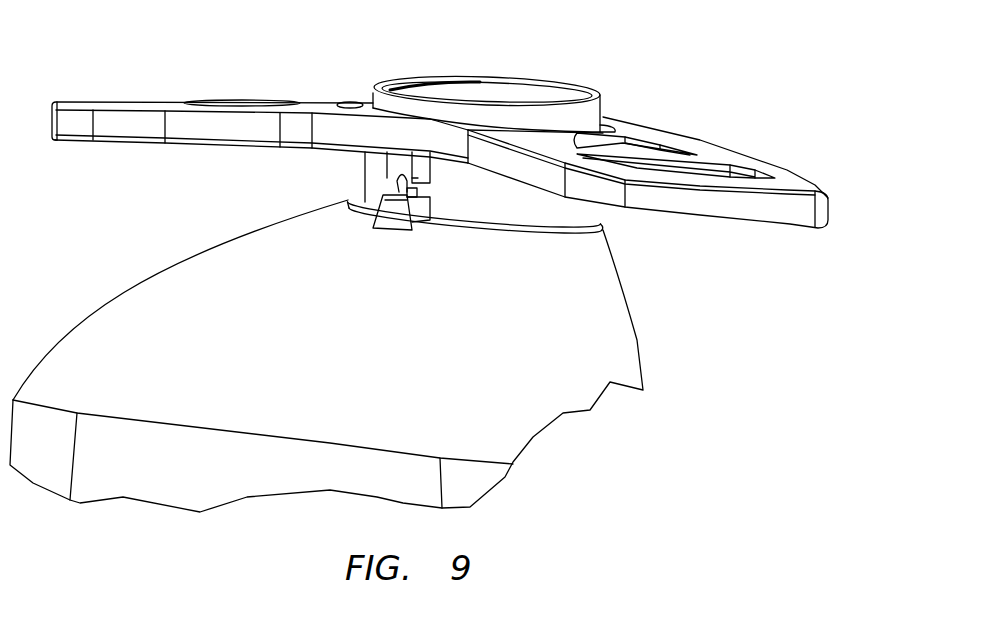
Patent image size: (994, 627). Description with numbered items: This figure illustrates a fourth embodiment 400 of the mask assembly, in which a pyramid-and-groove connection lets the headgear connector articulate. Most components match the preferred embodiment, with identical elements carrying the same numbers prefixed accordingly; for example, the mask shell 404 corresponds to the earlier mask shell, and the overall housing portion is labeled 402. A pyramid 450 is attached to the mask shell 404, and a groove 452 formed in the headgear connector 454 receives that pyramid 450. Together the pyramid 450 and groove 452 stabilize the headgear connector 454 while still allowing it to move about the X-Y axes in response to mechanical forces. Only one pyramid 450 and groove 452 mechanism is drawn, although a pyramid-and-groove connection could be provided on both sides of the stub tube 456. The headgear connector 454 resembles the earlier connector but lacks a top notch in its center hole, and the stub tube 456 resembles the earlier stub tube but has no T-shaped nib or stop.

The fourth embodiment 400 is at (742, 95).
The housing 402 is at (655, 333).
The mask shell 404 is at (153, 302).
The pyramid 450 is at (370, 182).
The groove 452 is at (435, 181).
The headgear connector 454 is at (150, 102).
The stub tube 456 is at (607, 113).